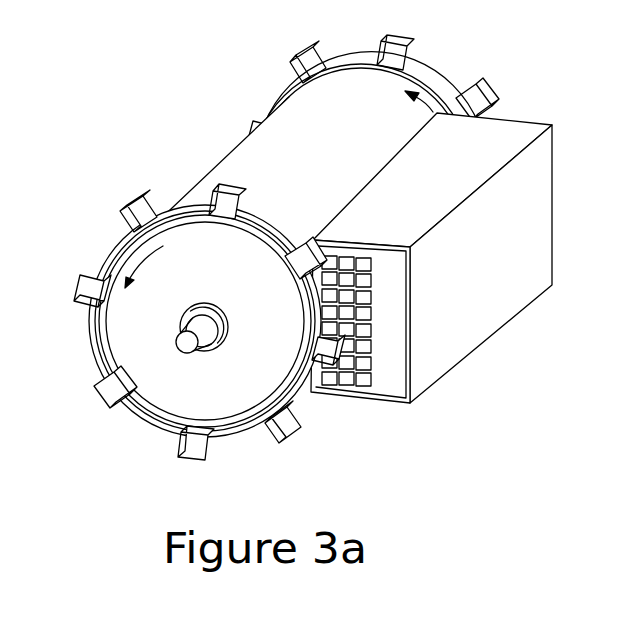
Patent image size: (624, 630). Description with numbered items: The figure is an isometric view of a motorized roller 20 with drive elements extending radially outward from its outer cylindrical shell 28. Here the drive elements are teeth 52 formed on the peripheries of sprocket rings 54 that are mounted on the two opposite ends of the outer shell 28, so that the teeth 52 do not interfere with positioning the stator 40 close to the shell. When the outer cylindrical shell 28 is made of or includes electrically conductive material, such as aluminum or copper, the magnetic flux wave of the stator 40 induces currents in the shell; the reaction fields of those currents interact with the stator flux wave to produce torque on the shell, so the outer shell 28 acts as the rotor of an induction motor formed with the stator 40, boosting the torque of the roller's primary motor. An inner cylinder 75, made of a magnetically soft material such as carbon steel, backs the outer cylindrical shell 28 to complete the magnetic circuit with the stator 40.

The motorized roller 20 is at (125, 332).
The outer cylindrical shell 28 is at (232, 165).
The stator 40 is at (452, 355).
The teeth 52 is at (283, 428).
The sprocket rings 54 is at (231, 436).
The inner cylinder 75 is at (163, 415).